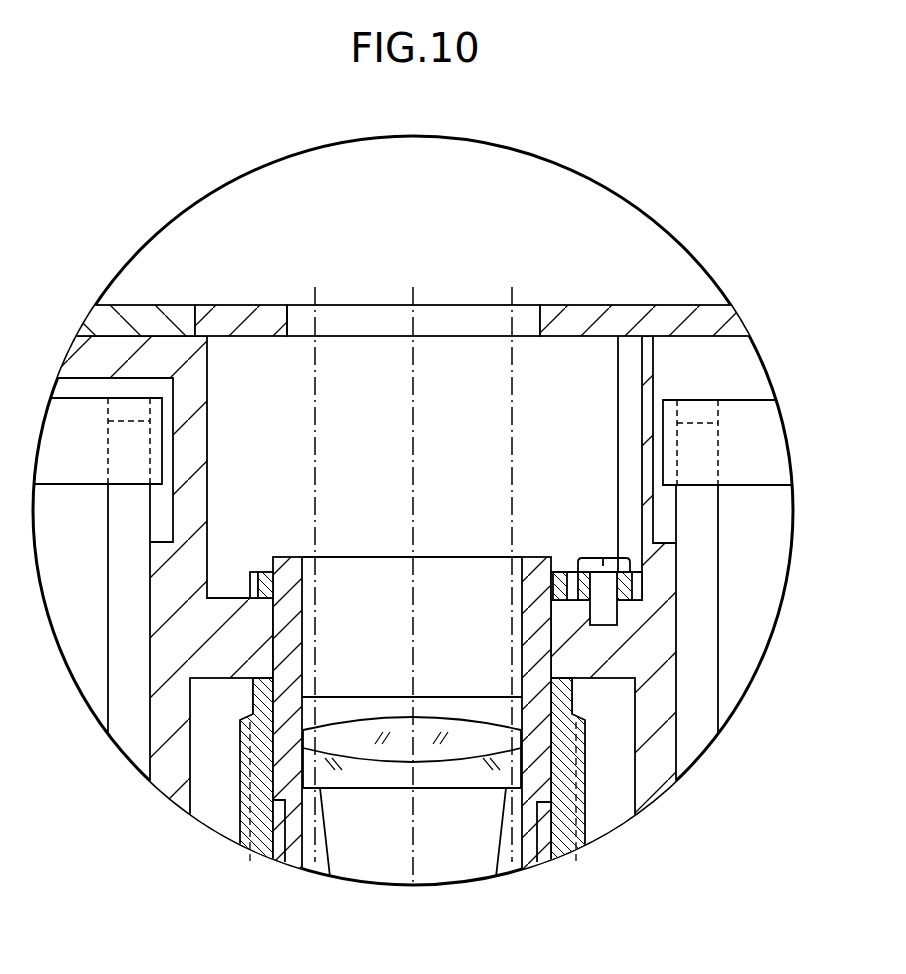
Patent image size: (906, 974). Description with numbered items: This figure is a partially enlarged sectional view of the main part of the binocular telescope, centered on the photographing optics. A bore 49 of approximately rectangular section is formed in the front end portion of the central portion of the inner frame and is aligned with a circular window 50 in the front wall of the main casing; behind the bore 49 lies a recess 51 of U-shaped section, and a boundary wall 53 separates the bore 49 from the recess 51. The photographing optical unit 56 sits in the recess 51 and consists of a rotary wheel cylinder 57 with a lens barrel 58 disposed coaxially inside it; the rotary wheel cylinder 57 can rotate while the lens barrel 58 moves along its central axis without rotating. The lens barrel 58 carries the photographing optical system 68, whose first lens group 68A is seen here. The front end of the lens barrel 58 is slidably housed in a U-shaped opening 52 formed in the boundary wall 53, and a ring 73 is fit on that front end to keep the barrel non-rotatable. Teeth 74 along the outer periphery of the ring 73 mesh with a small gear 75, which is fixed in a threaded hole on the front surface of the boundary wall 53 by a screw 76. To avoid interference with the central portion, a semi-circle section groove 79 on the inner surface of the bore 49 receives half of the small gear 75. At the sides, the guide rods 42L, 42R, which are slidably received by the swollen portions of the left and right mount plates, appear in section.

The guide rod 42L is at (130, 745).
The guide rod 42R is at (690, 740).
The bore 49 is at (210, 392).
The circular window 50 is at (287, 322).
The recess 51 is at (627, 793).
The U-shaped opening 52 is at (306, 620).
The boundary wall 53 is at (225, 667).
The photographing optical unit 56 is at (236, 806).
The rotary wheel cylinder 57 is at (262, 853).
The lens barrel 58 is at (308, 857).
The photographing optical system 68 is at (453, 692).
The first lens group 68A is at (445, 796).
The ring 73 is at (264, 563).
The teeth 74 is at (248, 576).
The small gear 75 is at (630, 610).
The screw 76 is at (590, 557).
The semi-circle section groove 79 is at (642, 472).